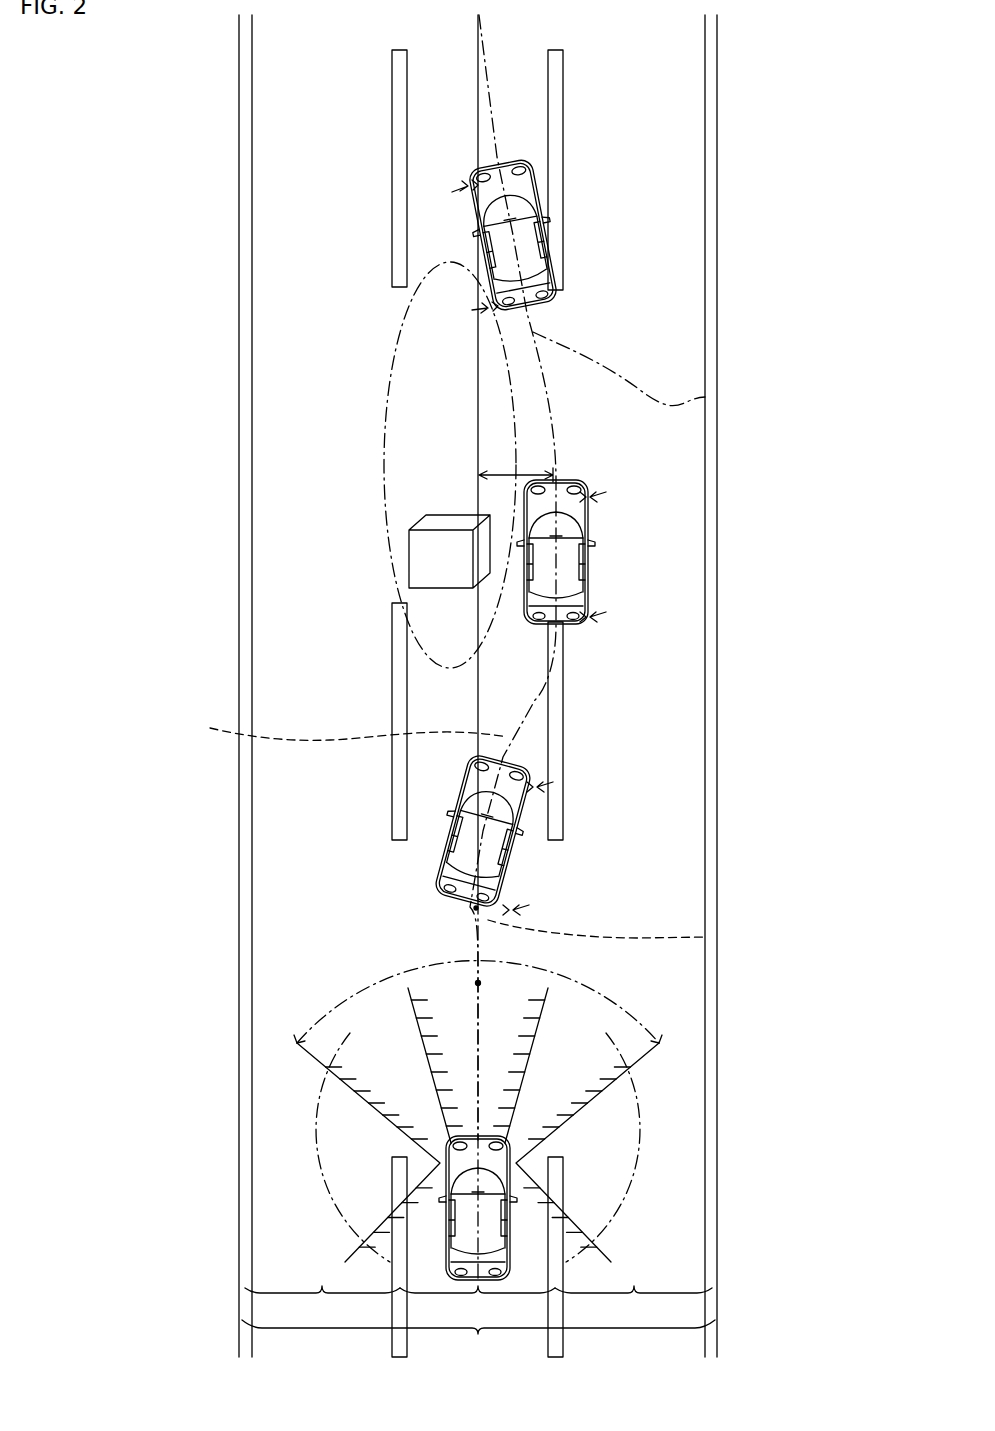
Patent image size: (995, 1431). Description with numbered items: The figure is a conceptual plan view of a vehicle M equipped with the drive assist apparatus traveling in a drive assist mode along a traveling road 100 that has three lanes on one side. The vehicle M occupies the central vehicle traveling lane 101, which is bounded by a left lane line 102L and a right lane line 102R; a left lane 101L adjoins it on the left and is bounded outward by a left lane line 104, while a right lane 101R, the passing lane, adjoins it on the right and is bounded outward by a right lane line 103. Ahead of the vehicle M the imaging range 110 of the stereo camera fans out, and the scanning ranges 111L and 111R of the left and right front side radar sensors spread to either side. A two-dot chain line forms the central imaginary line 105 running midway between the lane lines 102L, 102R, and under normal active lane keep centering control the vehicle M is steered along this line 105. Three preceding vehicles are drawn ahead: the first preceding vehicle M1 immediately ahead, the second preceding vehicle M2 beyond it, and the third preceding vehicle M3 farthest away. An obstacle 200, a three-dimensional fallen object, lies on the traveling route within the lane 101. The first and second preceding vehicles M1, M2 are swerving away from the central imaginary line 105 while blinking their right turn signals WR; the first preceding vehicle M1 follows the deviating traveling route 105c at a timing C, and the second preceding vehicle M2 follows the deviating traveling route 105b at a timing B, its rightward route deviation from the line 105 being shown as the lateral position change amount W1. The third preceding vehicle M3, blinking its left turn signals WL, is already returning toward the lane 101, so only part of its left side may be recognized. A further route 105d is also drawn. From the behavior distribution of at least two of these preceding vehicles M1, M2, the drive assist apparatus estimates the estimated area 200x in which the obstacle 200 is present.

The traveling road 100 is at (478, 1340).
The vehicle traveling lane 101 is at (477, 1307).
The left lane 101L is at (322, 1307).
The right lane 101R is at (633, 1307).
The left lane line 102L is at (393, 1252).
The right lane line 102R is at (563, 1255).
The right lane line of the right lane 103 is at (717, 1190).
The left lane line of the left lane 104 is at (240, 1186).
The central imaginary line 105 is at (467, 407).
The deviating traveling route of the second preceding vehicle 105b is at (708, 935).
The deviating traveling route of the first preceding vehicle 105c is at (327, 725).
The travel path segment 105d is at (718, 395).
The imaging range 110 is at (358, 988).
The scanning range of the left front side sensor 111L is at (312, 1107).
The scanning range of the right front side sensor 111R is at (640, 1110).
The obstacle 200 is at (409, 555).
The estimated area 200x is at (388, 482).
The vehicle M is at (506, 1222).
The first preceding vehicle M1 is at (503, 866).
The second preceding vehicle M2 is at (567, 626).
The third preceding vehicle M3 is at (556, 286).
The timing B is at (478, 983).
The timing C is at (475, 908).
The lateral position change amount W1 is at (497, 472).
The left turn signals WL is at (488, 308).
The right turn signals WR is at (590, 617).